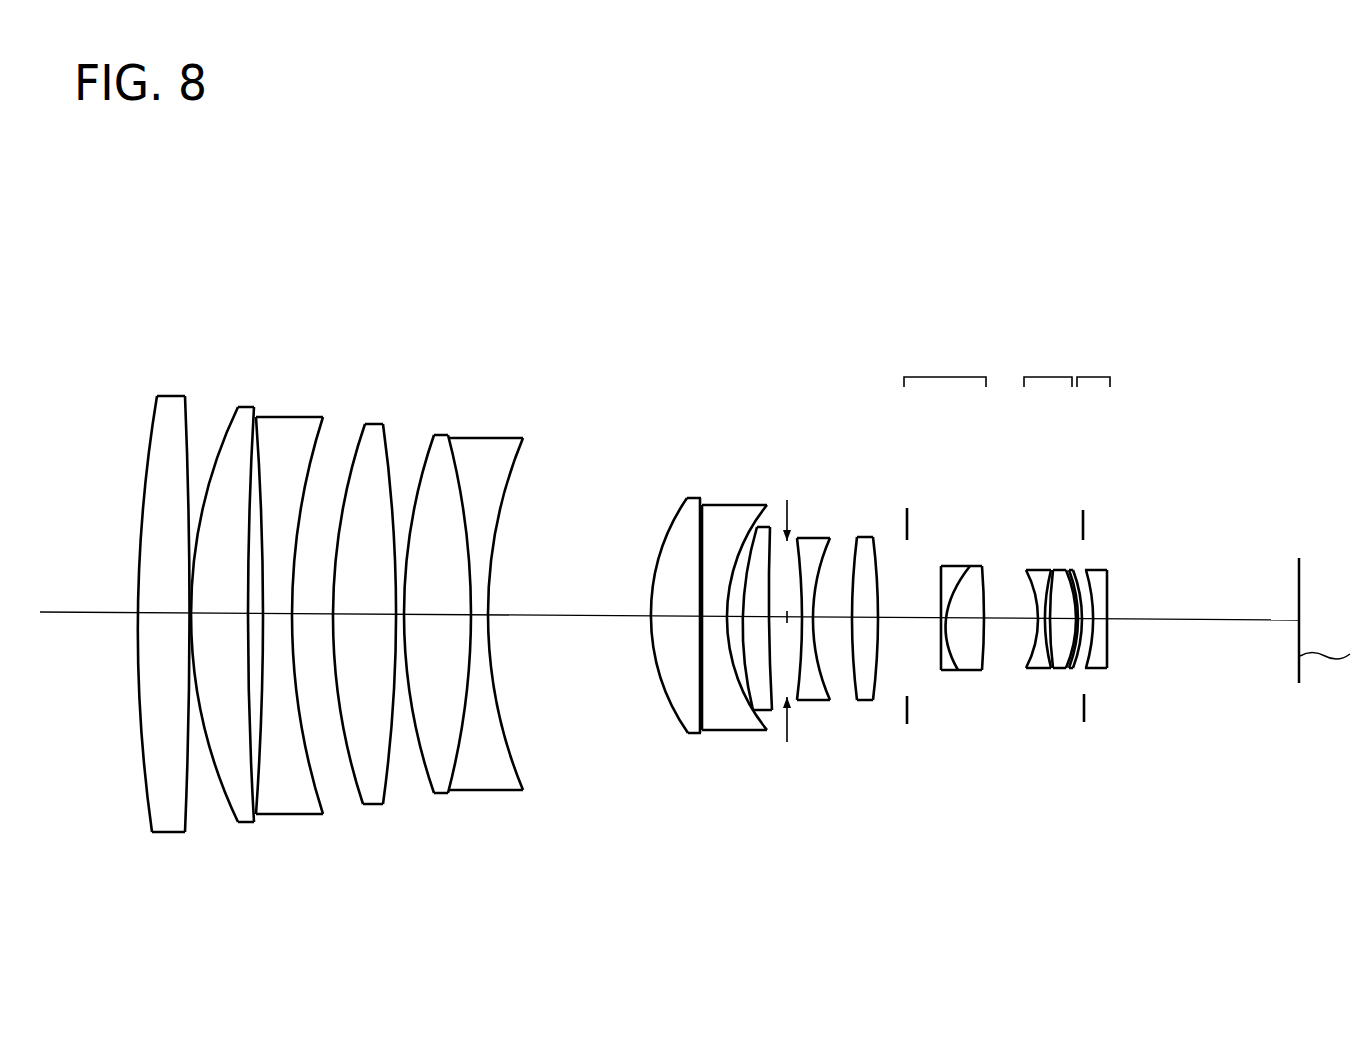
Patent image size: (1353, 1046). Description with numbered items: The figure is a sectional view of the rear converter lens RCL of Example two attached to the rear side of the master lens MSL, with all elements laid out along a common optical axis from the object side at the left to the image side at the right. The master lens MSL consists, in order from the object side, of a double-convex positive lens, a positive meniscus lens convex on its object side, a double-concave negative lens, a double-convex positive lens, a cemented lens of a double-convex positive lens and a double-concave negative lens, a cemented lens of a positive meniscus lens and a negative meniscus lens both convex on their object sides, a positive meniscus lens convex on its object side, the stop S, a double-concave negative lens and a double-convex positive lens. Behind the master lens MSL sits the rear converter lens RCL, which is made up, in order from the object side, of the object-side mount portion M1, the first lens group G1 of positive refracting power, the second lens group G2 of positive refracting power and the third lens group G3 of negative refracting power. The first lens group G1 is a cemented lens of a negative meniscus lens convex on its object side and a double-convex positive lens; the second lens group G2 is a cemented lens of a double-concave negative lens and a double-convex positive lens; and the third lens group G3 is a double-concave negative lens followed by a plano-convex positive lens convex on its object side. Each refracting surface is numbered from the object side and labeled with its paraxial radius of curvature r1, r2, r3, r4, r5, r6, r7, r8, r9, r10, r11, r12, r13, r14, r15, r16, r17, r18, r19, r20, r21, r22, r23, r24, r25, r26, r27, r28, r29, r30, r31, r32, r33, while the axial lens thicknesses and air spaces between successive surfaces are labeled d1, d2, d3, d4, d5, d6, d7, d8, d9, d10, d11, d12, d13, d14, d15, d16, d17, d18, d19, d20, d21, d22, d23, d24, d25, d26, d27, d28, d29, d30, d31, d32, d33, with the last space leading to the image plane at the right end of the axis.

The master lens MSL is at (548, 292).
The rear converter lens RCL is at (1057, 277).
The first lens group G1 is at (945, 368).
The second lens group G2 is at (1048, 368).
The third lens group G3 is at (1093, 368).
The stop S is at (787, 743).
The object-side mount portion M1 is at (907, 724).
The paraxial radius of curvature of lens surface 1 r1 is at (150, 421).
The paraxial radius of curvature of lens surface 2 r2 is at (195, 423).
The paraxial radius of curvature of lens surface 3 r3 is at (226, 428).
The paraxial radius of curvature of lens surface 4 r4 is at (251, 436).
The paraxial radius of curvature of lens surface 5 r5 is at (266, 442).
The paraxial radius of curvature of lens surface 6 r6 is at (315, 440).
The paraxial radius of curvature of lens surface 7 r7 is at (355, 449).
The paraxial radius of curvature of lens surface 8 r8 is at (388, 449).
The paraxial radius of curvature of lens surface 9 r9 is at (425, 456).
The paraxial radius of curvature of lens surface 10 r10 is at (457, 451).
The paraxial radius of curvature of lens surface 11 r11 is at (514, 462).
The paraxial radius of curvature of lens surface 12 r12 is at (668, 523).
The paraxial radius of curvature of lens surface 13 r13 is at (706, 527).
The paraxial radius of curvature of lens surface 14 r14 is at (744, 527).
The paraxial radius of curvature of lens surface 15 r15 is at (765, 527).
The paraxial radius of curvature of lens surface 16 r16 is at (773, 545).
The paraxial radius of curvature of surface 17 r17 is at (795, 532).
The paraxial radius of curvature of lens surface 18 r18 is at (802, 537).
The paraxial radius of curvature of lens surface 19 r19 is at (818, 547).
The paraxial radius of curvature of lens surface 20 r20 is at (852, 540).
The paraxial radius of curvature of lens surface 21 r21 is at (873, 547).
The paraxial radius of curvature of surface 22 r22 is at (910, 507).
The paraxial radius of curvature of lens surface 23 r23 is at (934, 567).
The paraxial radius of curvature of lens surface 24 r24 is at (956, 567).
The paraxial radius of curvature of lens surface 25 r25 is at (985, 567).
The paraxial radius of curvature of lens surface 26 r26 is at (1020, 568).
The paraxial radius of curvature of lens surface 27 r27 is at (1035, 567).
The paraxial radius of curvature of lens surface 28 r28 is at (1063, 568).
The paraxial radius of curvature of lens surface 29 r29 is at (1072, 568).
The paraxial radius of curvature of lens surface 30 r30 is at (1095, 568).
The paraxial radius of curvature of lens surface 31 r31 is at (1099, 570).
The paraxial radius of curvature of lens surface 32 r32 is at (1110, 580).
The paraxial radius of curvature of surface 33 r33 is at (1088, 568).
The thickness or air space 1 d1 is at (163, 631).
The thickness or air space 2 d2 is at (195, 618).
The thickness or air space 3 d3 is at (218, 631).
The thickness or air space 4 d4 is at (254, 618).
The thickness or air space 5 d5 is at (277, 618).
The thickness or air space 6 d6 is at (312, 631).
The thickness or air space 7 d7 is at (364, 631).
The thickness or air space 8 d8 is at (399, 618).
The thickness or air space 9 d9 is at (436, 631).
The thickness or air space 10 d10 is at (479, 618).
The thickness or air space 11 d11 is at (563, 631).
The thickness or air space 12 d12 is at (674, 631).
The thickness or air space 13 d13 is at (698, 733).
The thickness or air space 14 d14 is at (712, 620).
The thickness or air space 15 d15 is at (755, 620).
The thickness or air space 16 d16 is at (777, 620).
The thickness or air space 17 d17 is at (792, 620).
The thickness or air space 18 d18 is at (815, 620).
The thickness or air space 19 d19 is at (830, 631).
The thickness or air space 20 d20 is at (863, 620).
The thickness or air space 21 d21 is at (895, 620).
The thickness or air space 22 d22 is at (925, 622).
The thickness or air space 23 d23 is at (946, 670).
The thickness or air space 24 d24 is at (967, 635).
The thickness or air space 25 d25 is at (1007, 635).
The thickness or air space 26 d26 is at (1038, 668).
The thickness or air space 27 d27 is at (1054, 672).
The thickness or air space 28 d28 is at (1066, 672).
The thickness or air space 29 d29 is at (1080, 672).
The thickness or air space 30 d30 is at (1091, 672).
The thickness or air space 31 d31 is at (1103, 672).
The thickness or air space 32 d32 is at (1108, 635).
The thickness or air space 33 d33 is at (1193, 635).